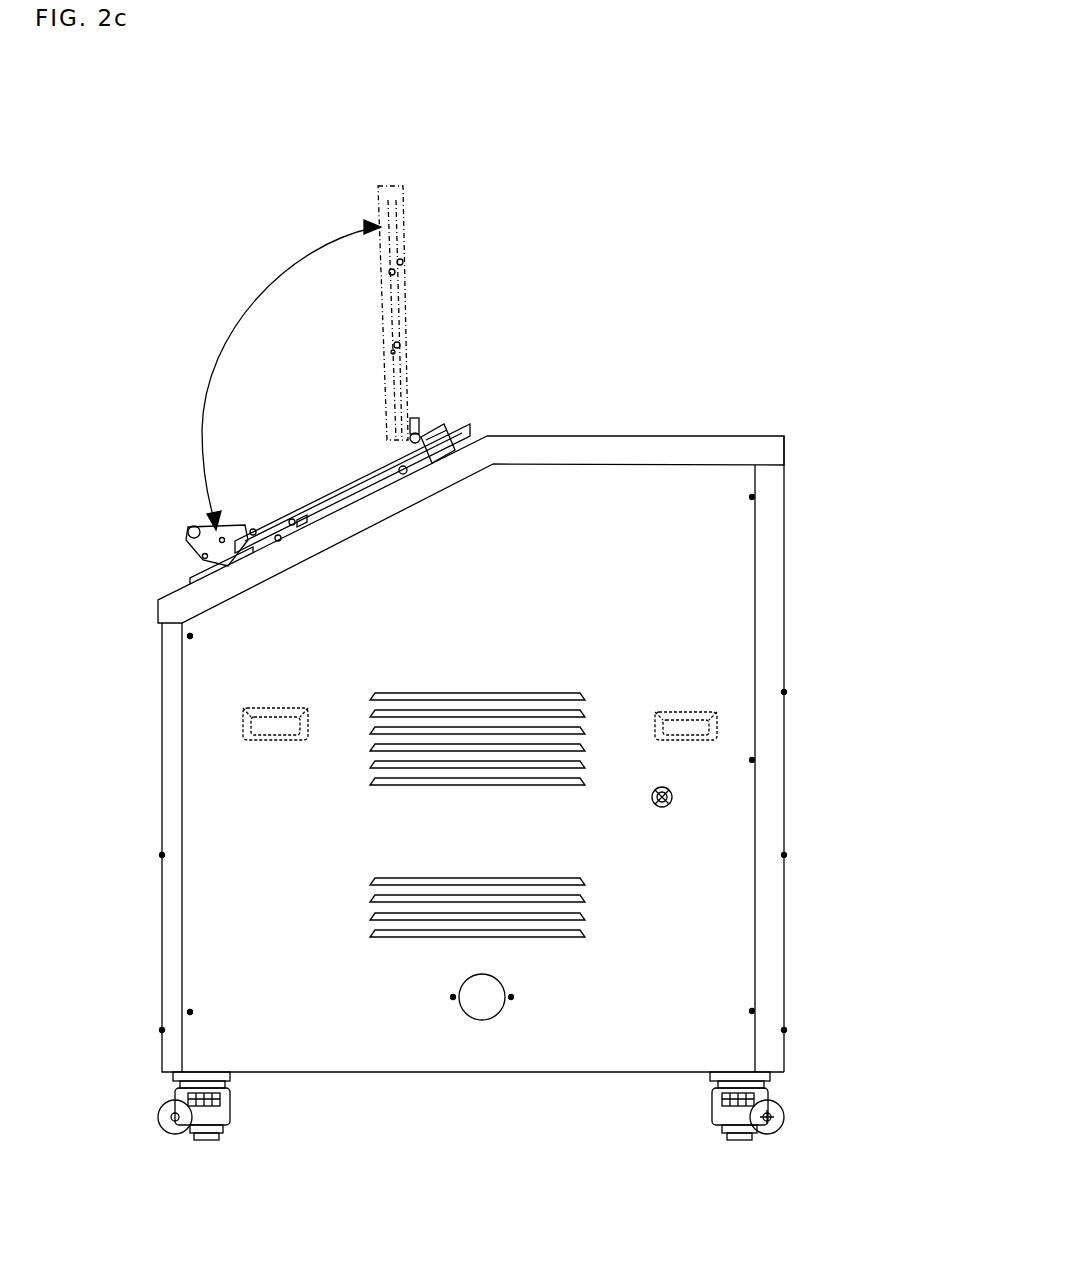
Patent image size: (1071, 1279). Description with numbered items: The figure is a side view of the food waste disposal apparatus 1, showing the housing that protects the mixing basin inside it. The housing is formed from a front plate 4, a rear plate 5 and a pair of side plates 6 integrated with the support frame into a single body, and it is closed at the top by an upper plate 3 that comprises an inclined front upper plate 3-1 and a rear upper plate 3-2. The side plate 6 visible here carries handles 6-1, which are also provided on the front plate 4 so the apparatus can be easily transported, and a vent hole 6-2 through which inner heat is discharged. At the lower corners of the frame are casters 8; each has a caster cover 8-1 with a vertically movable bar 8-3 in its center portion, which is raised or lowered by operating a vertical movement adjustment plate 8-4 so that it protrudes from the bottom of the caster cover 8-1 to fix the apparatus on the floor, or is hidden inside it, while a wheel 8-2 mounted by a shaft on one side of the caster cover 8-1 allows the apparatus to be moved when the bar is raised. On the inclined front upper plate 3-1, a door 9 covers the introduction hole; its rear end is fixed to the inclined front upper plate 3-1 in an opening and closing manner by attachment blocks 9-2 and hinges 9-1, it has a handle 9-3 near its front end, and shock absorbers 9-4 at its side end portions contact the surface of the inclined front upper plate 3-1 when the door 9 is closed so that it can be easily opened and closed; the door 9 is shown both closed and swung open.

The food waste disposal apparatus 1 is at (165, 165).
The upper plate 3 is at (692, 295).
The inclined front upper plate 3-1 is at (457, 483).
The rear upper plate 3-2 is at (572, 435).
The front plate 4 is at (166, 884).
The rear plate 5 is at (777, 720).
The side plate 6 is at (738, 582).
The handle 6-1 is at (668, 712).
The vent hole 6-2 is at (567, 787).
The caster 8 is at (885, 1112).
The caster cover 8-1 is at (778, 1110).
The wheel 8-2 is at (775, 1133).
The vertically movable bar 8-3 is at (743, 1139).
The vertical movement adjustment plate 8-4 is at (217, 1103).
The door 9 is at (320, 500).
The hinge 9-1 is at (413, 422).
The attachment block 9-2 is at (443, 427).
The handle 9-3 is at (192, 528).
The shock absorber 9-4 is at (310, 525).